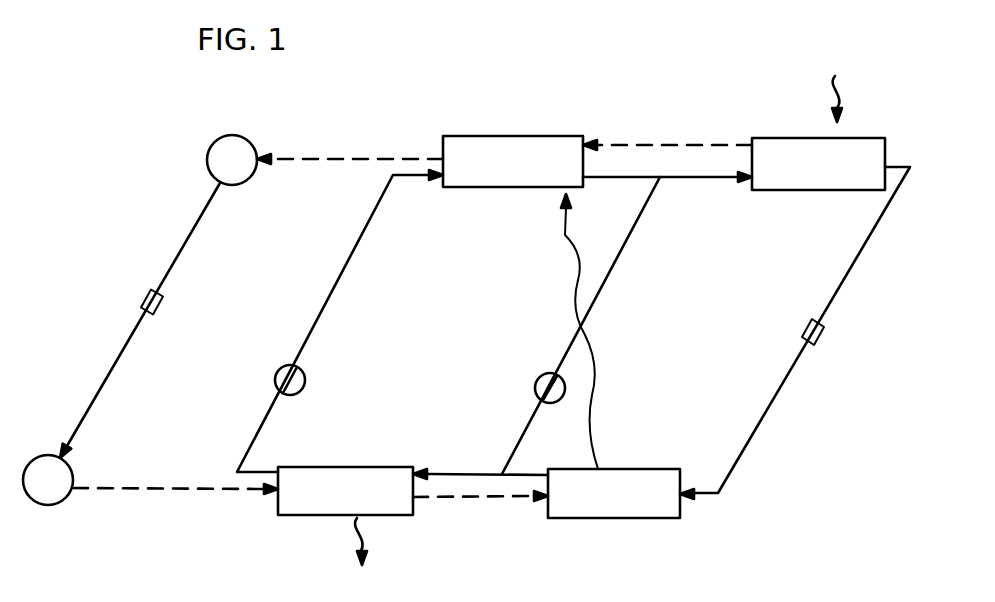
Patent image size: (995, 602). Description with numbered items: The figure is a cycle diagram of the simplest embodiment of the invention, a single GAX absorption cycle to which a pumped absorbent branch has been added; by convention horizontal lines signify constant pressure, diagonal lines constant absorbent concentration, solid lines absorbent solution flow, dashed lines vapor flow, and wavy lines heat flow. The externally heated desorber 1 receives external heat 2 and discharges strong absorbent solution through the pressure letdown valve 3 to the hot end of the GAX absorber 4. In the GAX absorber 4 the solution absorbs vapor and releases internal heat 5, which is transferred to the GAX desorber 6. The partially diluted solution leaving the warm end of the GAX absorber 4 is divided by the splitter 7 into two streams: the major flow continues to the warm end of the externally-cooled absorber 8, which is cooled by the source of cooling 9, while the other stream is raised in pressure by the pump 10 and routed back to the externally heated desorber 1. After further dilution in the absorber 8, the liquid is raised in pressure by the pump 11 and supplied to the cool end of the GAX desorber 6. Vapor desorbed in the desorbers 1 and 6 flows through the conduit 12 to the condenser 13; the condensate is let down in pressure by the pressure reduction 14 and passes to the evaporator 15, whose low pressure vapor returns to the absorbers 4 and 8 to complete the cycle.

The externally heated desorber 1 is at (768, 190).
The external heat 2 is at (840, 90).
The pressure letdown valve 3 is at (816, 341).
The GAX absorber 4 is at (652, 469).
The internal heat 5 is at (596, 352).
The GAX desorber 6 is at (449, 187).
The splitter 7 is at (498, 468).
The externally-cooled absorber 8 is at (360, 467).
The source of cooling 9 is at (364, 534).
The pump 10 is at (552, 403).
The pump 11 is at (302, 370).
The conduit 12 is at (332, 157).
The condenser 13 is at (246, 180).
The pressure reduction 14 is at (153, 312).
The evaporator 15 is at (70, 466).